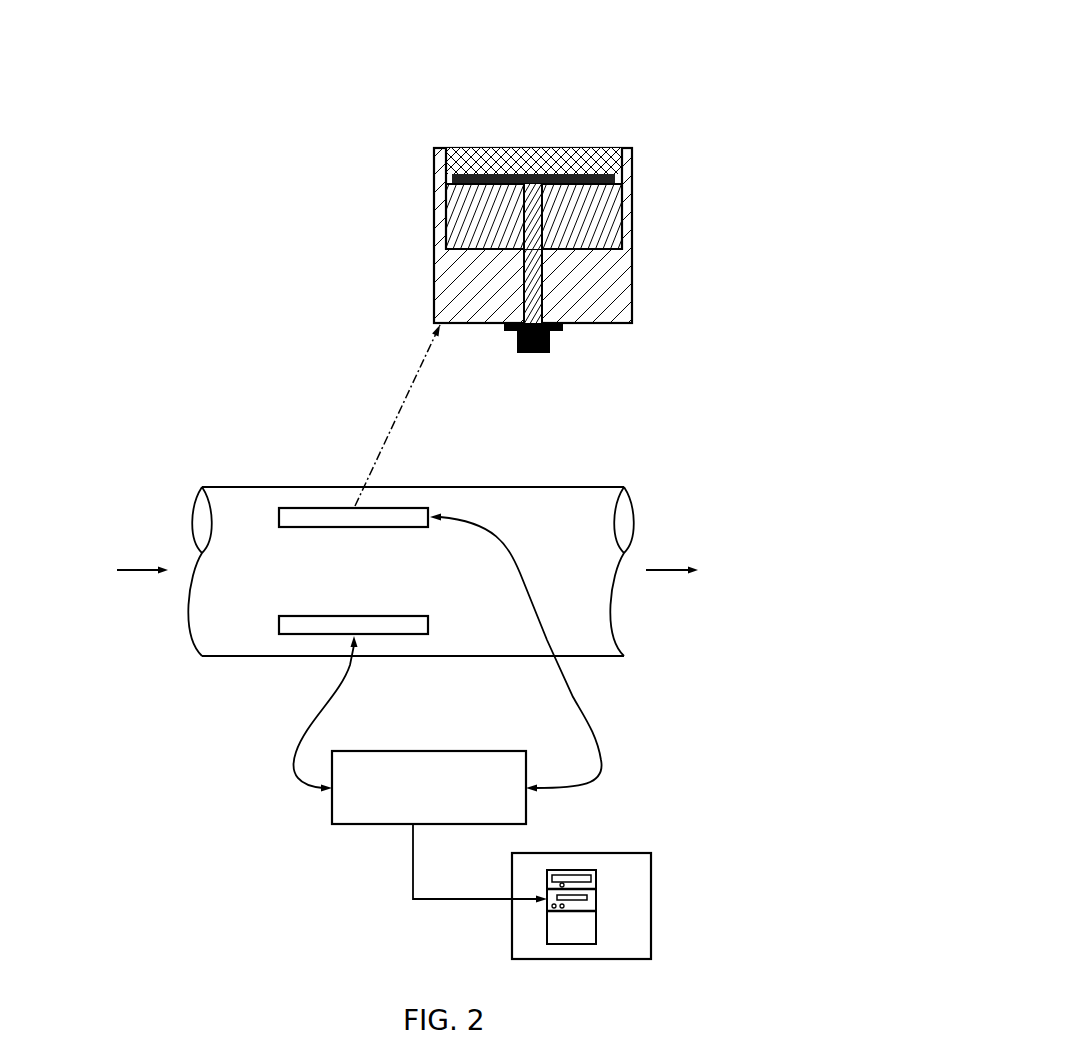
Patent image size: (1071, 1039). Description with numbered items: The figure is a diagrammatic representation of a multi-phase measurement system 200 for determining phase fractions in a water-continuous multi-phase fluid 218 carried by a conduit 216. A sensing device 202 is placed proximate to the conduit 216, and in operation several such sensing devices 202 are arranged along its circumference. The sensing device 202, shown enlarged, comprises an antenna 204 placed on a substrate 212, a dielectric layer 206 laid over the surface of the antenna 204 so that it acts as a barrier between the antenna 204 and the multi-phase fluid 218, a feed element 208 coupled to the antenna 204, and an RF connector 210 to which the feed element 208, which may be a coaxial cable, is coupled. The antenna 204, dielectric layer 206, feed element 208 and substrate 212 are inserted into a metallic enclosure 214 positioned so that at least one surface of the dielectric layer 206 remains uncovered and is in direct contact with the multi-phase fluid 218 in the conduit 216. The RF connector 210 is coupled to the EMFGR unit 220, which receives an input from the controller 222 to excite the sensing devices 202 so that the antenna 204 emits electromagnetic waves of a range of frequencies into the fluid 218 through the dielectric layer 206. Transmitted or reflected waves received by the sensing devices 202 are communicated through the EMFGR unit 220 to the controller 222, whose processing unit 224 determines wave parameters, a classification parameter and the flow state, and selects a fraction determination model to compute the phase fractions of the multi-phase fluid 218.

The multi-phase measurement system 200 is at (693, 84).
The sensing device 202 is at (291, 614).
The antenna 204 is at (446, 176).
The dielectric layer 206 is at (625, 163).
The feed element 208 is at (543, 266).
The RF connector 210 is at (551, 344).
The substrate 212 is at (618, 203).
The metallic enclosure 214 is at (633, 302).
The conduit 216 is at (568, 487).
The multi-phase fluid 218 is at (143, 574).
The EMFGR unit 220 is at (413, 751).
The controller 222 is at (636, 853).
The processing unit 224 is at (573, 870).